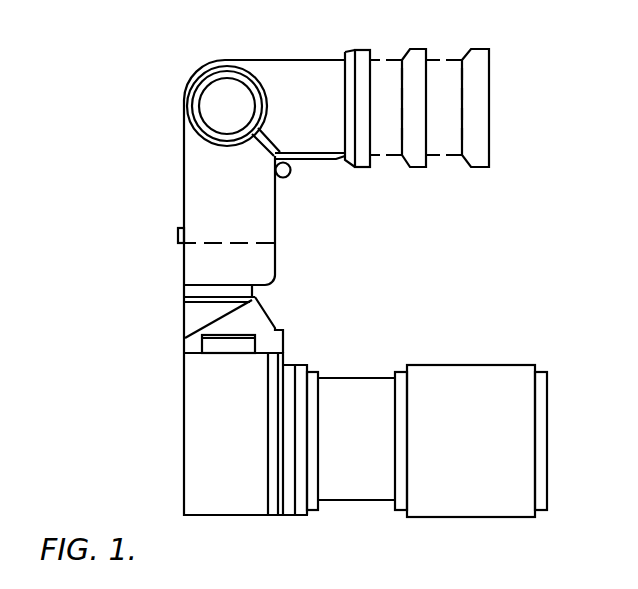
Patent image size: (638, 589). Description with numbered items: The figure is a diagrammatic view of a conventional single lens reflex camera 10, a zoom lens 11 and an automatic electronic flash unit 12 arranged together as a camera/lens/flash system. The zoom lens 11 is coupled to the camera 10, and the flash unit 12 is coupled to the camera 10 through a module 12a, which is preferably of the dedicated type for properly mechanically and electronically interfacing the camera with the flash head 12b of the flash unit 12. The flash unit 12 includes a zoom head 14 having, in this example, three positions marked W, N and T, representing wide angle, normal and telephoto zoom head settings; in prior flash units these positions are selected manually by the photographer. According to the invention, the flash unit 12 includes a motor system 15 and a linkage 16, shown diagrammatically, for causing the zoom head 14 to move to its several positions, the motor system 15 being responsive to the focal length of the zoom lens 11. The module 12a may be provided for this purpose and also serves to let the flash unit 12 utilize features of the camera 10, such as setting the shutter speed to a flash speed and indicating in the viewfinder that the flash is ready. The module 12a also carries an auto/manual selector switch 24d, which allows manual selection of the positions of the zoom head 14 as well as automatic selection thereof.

The single lens reflex camera 10 is at (178, 404).
The zoom lens 11 is at (378, 358).
The automatic electronic flash unit 12 is at (180, 129).
The module 12a is at (184, 260).
The flash head 12b is at (184, 110).
The zoom head 14 is at (330, 60).
The motor system 15 is at (289, 177).
The linkage 16 is at (328, 162).
The auto/manual selector switch 24d is at (178, 232).